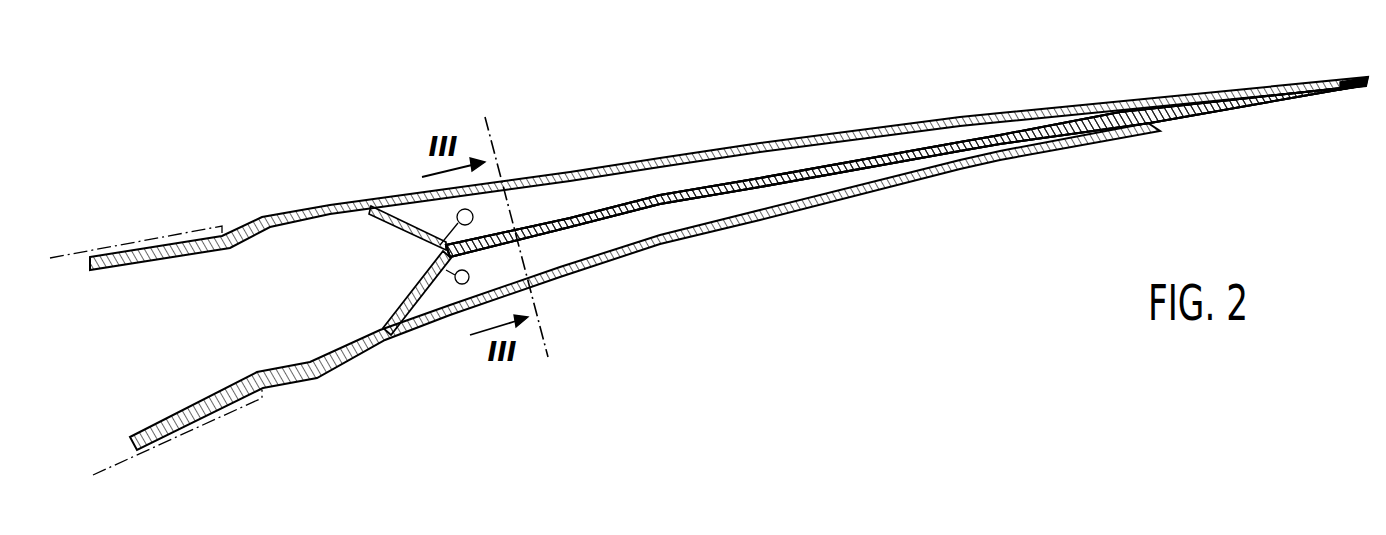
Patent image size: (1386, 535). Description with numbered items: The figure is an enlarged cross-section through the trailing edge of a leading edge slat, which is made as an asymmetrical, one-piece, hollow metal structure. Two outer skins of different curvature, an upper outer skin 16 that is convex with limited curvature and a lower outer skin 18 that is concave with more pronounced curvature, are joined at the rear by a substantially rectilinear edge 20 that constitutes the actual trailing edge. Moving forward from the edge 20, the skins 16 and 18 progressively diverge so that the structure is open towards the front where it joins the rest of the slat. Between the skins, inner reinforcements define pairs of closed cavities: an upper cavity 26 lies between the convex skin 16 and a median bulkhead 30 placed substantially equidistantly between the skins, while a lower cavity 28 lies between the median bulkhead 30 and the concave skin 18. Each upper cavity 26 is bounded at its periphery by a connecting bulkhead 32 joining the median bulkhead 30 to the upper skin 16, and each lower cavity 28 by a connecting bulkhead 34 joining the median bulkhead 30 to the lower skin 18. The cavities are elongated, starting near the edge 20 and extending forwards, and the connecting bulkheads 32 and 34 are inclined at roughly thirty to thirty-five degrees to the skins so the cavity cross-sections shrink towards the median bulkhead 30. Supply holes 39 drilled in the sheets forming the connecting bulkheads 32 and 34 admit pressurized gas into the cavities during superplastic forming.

The upper outer skin 16 is at (700, 159).
The lower outer skin 18 is at (760, 220).
The edge 20 is at (1370, 85).
The upper cavity 26 is at (842, 148).
The lower cavity 28 is at (903, 164).
The median bulkhead 30 is at (613, 216).
The connecting bulkhead 32 is at (385, 228).
The connecting bulkhead 34 is at (394, 312).
The supply hole 39 is at (437, 236).